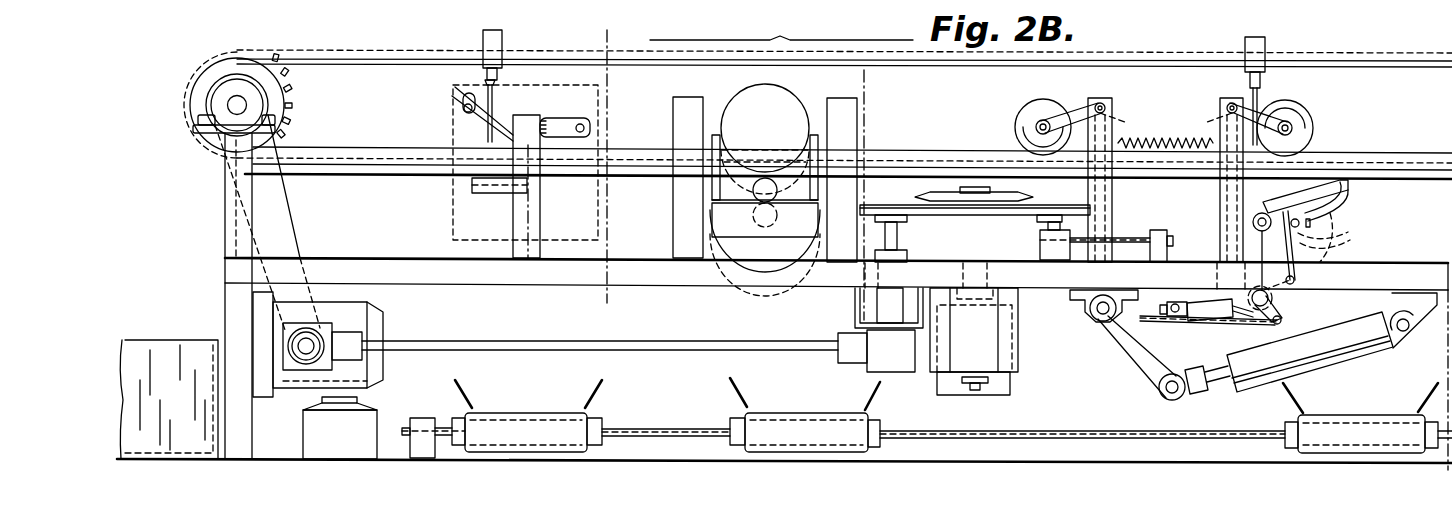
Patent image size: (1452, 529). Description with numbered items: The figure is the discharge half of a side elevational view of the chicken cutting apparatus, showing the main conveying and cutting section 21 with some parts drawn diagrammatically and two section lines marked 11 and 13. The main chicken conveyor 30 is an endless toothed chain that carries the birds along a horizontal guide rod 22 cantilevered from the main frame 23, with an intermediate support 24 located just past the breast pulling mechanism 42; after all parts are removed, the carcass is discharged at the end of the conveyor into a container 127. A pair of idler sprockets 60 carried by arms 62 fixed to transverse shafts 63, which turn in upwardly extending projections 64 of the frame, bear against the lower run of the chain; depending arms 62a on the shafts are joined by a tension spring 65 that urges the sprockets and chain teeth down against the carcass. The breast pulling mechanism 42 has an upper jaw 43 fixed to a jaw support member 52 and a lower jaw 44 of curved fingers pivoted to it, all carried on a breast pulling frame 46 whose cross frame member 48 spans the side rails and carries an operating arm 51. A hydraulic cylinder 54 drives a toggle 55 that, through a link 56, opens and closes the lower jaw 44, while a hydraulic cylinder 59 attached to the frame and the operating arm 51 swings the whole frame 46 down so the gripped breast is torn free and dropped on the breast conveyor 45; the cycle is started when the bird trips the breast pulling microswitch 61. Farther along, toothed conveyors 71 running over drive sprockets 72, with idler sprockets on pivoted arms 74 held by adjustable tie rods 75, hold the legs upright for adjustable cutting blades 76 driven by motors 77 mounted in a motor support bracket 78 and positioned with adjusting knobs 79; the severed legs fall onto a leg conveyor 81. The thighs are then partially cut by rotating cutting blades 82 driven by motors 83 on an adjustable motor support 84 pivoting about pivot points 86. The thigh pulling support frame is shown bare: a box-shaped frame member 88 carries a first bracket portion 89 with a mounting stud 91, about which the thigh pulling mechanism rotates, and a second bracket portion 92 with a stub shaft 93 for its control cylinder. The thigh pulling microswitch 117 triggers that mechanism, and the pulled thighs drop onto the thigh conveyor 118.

The main chicken conveyor 30 is at (197, 63).
The main conveying and cutting section 21 is at (781, 26).
The guide rod 22 is at (360, 170).
The main frame 23 is at (333, 257).
The container 127 is at (162, 340).
The section line 13 is at (573, 35).
The section line 11 is at (884, 83).
The thigh pulling microswitch 117 is at (483, 40).
The breast pulling microswitch 61 is at (1256, 37).
The pivot points 86 is at (453, 117).
The mounting stud 91 is at (462, 100).
The first bracket portion 89 is at (507, 106).
The box-shaped frame member 88 is at (538, 213).
The second bracket portion 92 is at (570, 118).
The stub shaft 93 is at (585, 128).
The adjustable motor support 84 is at (717, 220).
The cutting blades 82 is at (745, 260).
The motors 83 is at (778, 123).
The toothed conveyors 71 is at (871, 205).
The adjustable cutting blades 76 is at (1024, 196).
The drive sprockets 72 is at (905, 222).
The pivoted arms 74 is at (1040, 243).
The adjustable tie rods 75 is at (1128, 238).
The upwardly extending projections 64 is at (1112, 191).
The intermediate support 24 is at (1226, 192).
The transversely extending shafts 63 is at (1102, 103).
The arms 62 is at (1075, 112).
The depending arms 62a is at (1117, 120).
The idler sprockets 60 is at (1030, 115).
The tension spring 65 is at (1160, 141).
The upper jaw 43 is at (1300, 192).
The breast pulling mechanism 42 is at (1343, 210).
The lower jaw 44 is at (1335, 242).
The jaw support member 52 is at (1267, 247).
The link 56 is at (1297, 280).
The toggle 55 is at (1290, 305).
The cross frame member 48 is at (1103, 318).
The breast pulling frame 46 is at (1182, 320).
The hydraulic cylinder 54 is at (1212, 323).
The operating arm 51 is at (1143, 362).
The hydraulic cylinder 59 is at (1326, 358).
The breast conveyor 45 is at (1352, 414).
The thigh conveyor 118 is at (523, 412).
The leg conveyor 81 is at (795, 413).
The motor support bracket 78 is at (1018, 368).
The motors 77 is at (952, 390).
The adjusting knobs 79 is at (982, 386).